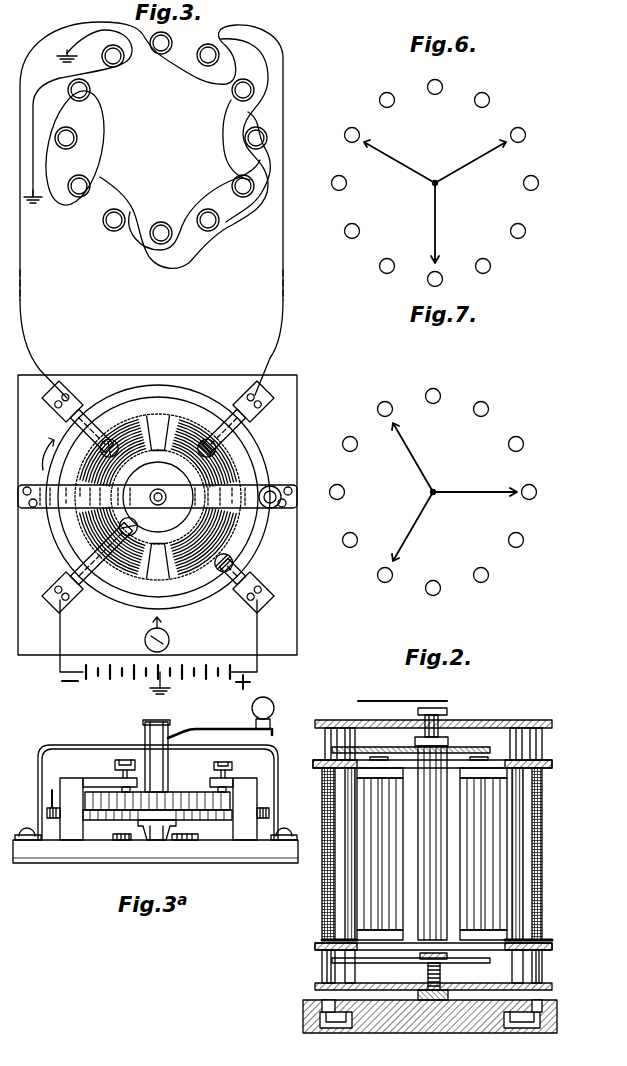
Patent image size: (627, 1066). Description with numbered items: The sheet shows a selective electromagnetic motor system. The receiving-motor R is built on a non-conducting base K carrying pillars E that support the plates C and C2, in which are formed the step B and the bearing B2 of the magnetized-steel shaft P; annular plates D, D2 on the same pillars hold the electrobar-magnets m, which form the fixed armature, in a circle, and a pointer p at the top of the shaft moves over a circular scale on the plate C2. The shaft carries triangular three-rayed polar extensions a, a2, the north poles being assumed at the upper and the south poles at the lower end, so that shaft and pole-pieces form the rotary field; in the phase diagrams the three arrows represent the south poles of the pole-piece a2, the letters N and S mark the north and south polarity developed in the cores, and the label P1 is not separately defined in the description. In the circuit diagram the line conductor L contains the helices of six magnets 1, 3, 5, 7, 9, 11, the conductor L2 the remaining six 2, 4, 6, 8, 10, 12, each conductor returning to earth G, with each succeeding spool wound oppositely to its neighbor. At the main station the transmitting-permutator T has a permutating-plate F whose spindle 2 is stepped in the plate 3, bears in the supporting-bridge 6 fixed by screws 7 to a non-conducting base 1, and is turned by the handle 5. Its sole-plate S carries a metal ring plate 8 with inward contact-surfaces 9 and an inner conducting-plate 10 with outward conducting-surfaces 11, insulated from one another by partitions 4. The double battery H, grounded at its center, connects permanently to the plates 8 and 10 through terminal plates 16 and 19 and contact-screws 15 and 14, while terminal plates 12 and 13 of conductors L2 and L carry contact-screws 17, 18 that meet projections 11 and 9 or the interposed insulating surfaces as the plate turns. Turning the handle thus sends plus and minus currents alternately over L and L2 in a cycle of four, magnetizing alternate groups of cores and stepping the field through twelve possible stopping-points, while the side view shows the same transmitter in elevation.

In FIG. 3, the non-conducting base 1 is at (297, 440).
In FIG. 6, the non-conducting base 1 is at (435, 87).
In FIG. 7, the non-conducting base 1 is at (433, 396).
In FIG. 3A, the non-conducting base 1 is at (211, 862).
In FIG. 3, the spindle 2 is at (156, 514).
In FIG. 6, the spindle 2 is at (482, 100).
In FIG. 7, the spindle 2 is at (481, 409).
In FIG. 3A, the spindle 2 is at (158, 733).
In FIG. 3, the plate 3 is at (243, 90).
In FIG. 6, the plate 3 is at (518, 135).
In FIG. 7, the plate 3 is at (516, 444).
In FIG. 3A, the plate 3 is at (151, 830).
In FIG. 3, the non-conducting plates or partitions 4 is at (195, 338).
In FIG. 6, the non-conducting plates or partitions 4 is at (531, 183).
In FIG. 7, the non-conducting plates or partitions 4 is at (529, 492).
In FIG. 3, the crank or handle 5 is at (274, 486).
In FIG. 6, the crank or handle 5 is at (518, 231).
In FIG. 7, the crank or handle 5 is at (516, 540).
In FIG. 3A, the crank or handle 5 is at (221, 717).
In FIG. 3, the supporting-bridge 6 is at (34, 516).
In FIG. 6, the supporting-bridge 6 is at (483, 266).
In FIG. 7, the supporting-bridge 6 is at (481, 575).
In FIG. 3A, the supporting-bridge 6 is at (78, 745).
In FIG. 3, the screws 7 is at (288, 488).
In FIG. 6, the screws 7 is at (435, 279).
In FIG. 7, the screws 7 is at (433, 588).
In FIG. 3A, the screws 7 is at (288, 834).
In FIG. 3, the metal ring plate 8 is at (188, 608).
In FIG. 6, the metal ring plate 8 is at (387, 266).
In FIG. 7, the metal ring plate 8 is at (385, 575).
In FIG. 3, the inwardly-projecting contact-surfaces 9 is at (110, 428).
In FIG. 6, the inwardly-projecting contact-surfaces 9 is at (352, 231).
In FIG. 7, the inwardly-projecting contact-surfaces 9 is at (350, 540).
In FIG. 3, the inner conducting-plate 10 is at (126, 300).
In FIG. 6, the inner conducting-plate 10 is at (339, 183).
In FIG. 7, the inner conducting-plate 10 is at (337, 492).
In FIG. 3, the outwardly-projecting conducting-surfaces 11 is at (140, 328).
In FIG. 6, the outwardly-projecting conducting-surfaces 11 is at (352, 135).
In FIG. 7, the outwardly-projecting conducting-surfaces 11 is at (350, 444).
In FIG. 3, the terminal plate 12 is at (262, 405).
In FIG. 6, the terminal plate 12 is at (387, 100).
In FIG. 7, the terminal plate 12 is at (385, 409).
In FIG. 3, the terminal plate 13 is at (74, 403).
In FIG. 3, the contact-screw 14 is at (124, 532).
In FIG. 3A, the contact-screw 14 is at (116, 775).
In FIG. 3, the contact-screw 15 is at (226, 566).
In FIG. 3A, the contact-screw 15 is at (233, 769).
In FIG. 3, the terminal plate 16 is at (243, 606).
In FIG. 3A, the terminal plate 16 is at (239, 809).
In FIG. 3, the contact-screw 17 is at (214, 442).
In FIG. 3, the contact-screw 18 is at (95, 434).
In FIG. 3, the terminal plate 19 is at (77, 601).
In FIG. 3A, the terminal plate 19 is at (92, 809).
In FIG. 3, the electrobar-magnets m is at (163, 157).
In FIG. 2, the electrobar-magnets m is at (322, 893).
In FIG. 3, the selective receiving-motor R is at (185, 139).
In FIG. 6, the selective receiving-motor R is at (435, 201).
In FIG. 7, the selective receiving-motor R is at (454, 492).
In FIG. 2, the selective receiving-motor R is at (433, 713).
In FIG. 3, the main conductor L is at (151, 210).
In FIG. 3, the main conductor L2 is at (269, 326).
In FIG. 3, the return-conductor G is at (105, 374).
In FIG. 3, the transmitting-permutator T is at (158, 482).
In FIG. 3A, the transmitting-permutator T is at (126, 749).
In FIG. 3, the permutating-plate F is at (265, 511).
In FIG. 3A, the permutating-plate F is at (186, 792).
In FIG. 3, the sole-plate S is at (252, 543).
In FIG. 6, the sole-plate S is at (432, 160).
In FIG. 3A, the sole-plate S is at (49, 792).
In FIG. 2, the sole-plate S is at (337, 968).
In FIG. 3, the double battery H is at (158, 649).
In FIG. 7, the magnetized-steel shaft P is at (435, 518).
In FIG. 2, the magnetized-steel shaft P is at (438, 884).
In FIG. 6, the pole P1 is at (417, 199).
In FIG. 6, the north pole N is at (438, 201).
In FIG. 2, the north pole N is at (340, 744).
In FIG. 2, the index finger or pointer p is at (394, 694).
In FIG. 2, the bearing B2 is at (447, 722).
In FIG. 2, the plate C2 is at (513, 727).
In FIG. 2, the triangular polar extension a is at (461, 753).
In FIG. 2, the triangular polar extension a2 is at (401, 963).
In FIG. 2, the annular plate D is at (313, 765).
In FIG. 2, the annular plate D2 is at (421, 945).
In FIG. 2, the pillars E is at (322, 966).
In FIG. 2, the plate C is at (440, 987).
In FIG. 2, the step B is at (445, 981).
In FIG. 2, the non-conducting base K is at (303, 1012).